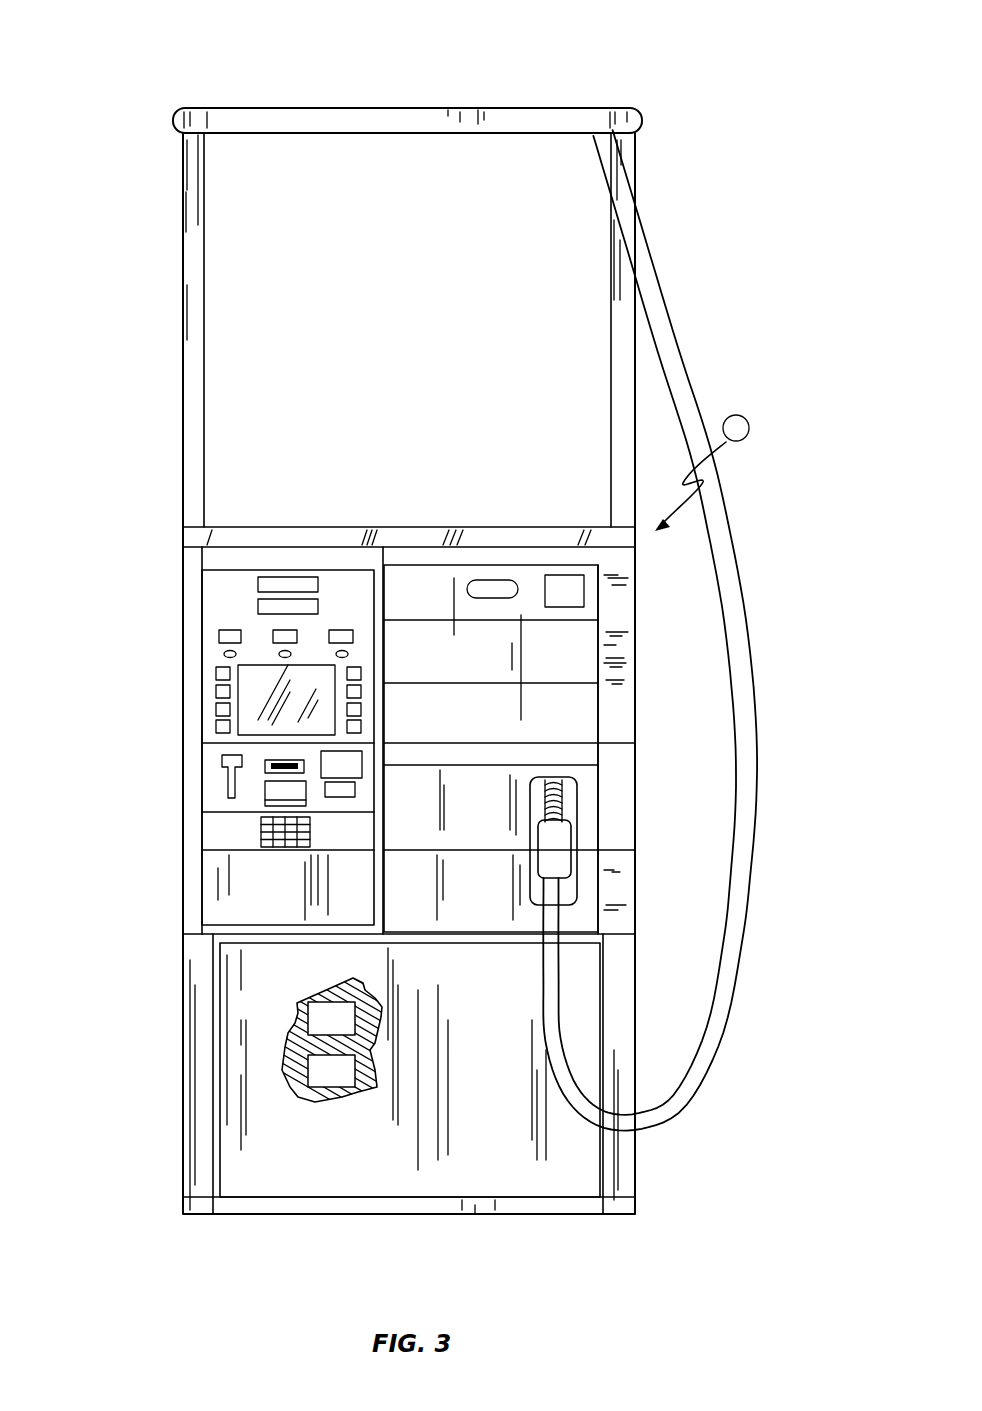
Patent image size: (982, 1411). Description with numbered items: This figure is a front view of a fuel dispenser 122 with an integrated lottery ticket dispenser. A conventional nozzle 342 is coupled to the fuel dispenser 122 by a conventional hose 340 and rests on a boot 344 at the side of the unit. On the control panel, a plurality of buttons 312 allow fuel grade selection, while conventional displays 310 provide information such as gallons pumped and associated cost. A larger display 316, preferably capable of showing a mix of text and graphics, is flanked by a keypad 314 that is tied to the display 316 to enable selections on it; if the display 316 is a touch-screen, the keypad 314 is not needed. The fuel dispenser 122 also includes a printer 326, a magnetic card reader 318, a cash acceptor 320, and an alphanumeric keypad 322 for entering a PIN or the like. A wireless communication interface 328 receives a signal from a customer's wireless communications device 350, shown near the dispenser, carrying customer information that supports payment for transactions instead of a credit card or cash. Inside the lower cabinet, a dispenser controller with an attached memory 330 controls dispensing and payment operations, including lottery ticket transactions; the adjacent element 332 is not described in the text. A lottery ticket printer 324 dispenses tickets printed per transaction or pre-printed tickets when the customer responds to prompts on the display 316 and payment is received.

The fuel dispenser 122 is at (710, 92).
The displays 310 is at (258, 604).
The buttons 312 is at (340, 632).
The keypad 314 is at (216, 690).
The display 316 is at (238, 717).
The magnetic card reader 318 is at (222, 757).
The cash acceptor 320 is at (265, 792).
The keypad 322 is at (261, 833).
The lottery ticket printer 324 is at (345, 797).
The printer 326 is at (362, 752).
The wireless communication interface 328 is at (584, 590).
The memory 330 is at (350, 1083).
The interior component panel 332 is at (350, 1031).
The hose 340 is at (752, 705).
The nozzle 342 is at (572, 855).
The boot 344 is at (578, 803).
The wireless communications device 350 is at (746, 418).